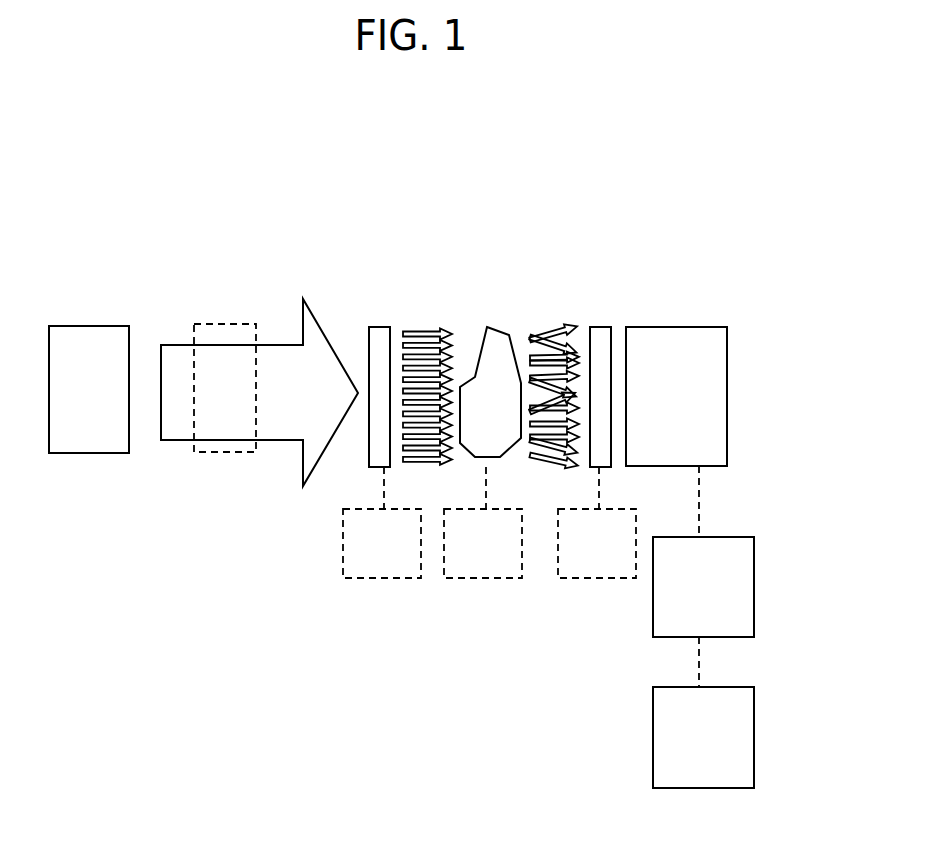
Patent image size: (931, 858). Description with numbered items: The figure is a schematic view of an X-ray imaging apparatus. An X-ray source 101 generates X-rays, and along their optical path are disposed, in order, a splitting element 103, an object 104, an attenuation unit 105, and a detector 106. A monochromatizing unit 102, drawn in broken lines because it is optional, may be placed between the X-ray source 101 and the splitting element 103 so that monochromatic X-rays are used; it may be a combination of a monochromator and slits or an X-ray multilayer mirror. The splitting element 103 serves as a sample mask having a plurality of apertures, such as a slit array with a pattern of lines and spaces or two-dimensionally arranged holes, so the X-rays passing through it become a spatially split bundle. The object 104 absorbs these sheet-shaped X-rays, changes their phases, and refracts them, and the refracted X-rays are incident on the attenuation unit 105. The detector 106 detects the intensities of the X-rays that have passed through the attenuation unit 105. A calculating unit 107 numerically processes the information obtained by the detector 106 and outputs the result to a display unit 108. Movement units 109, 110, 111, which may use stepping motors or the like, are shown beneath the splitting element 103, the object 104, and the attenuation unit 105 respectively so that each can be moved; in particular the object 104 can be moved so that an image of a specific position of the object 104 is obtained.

The X-ray source 101 is at (65, 326).
The monochromatizing unit 102 is at (228, 324).
The splitting element 103 is at (382, 327).
The object 104 is at (505, 327).
The attenuation unit 105 is at (607, 327).
The detector 106 is at (678, 327).
The calculating unit 107 is at (755, 586).
The display unit 108 is at (742, 687).
The movement unit 109 is at (376, 578).
The movement unit 110 is at (477, 578).
The movement unit 111 is at (588, 578).